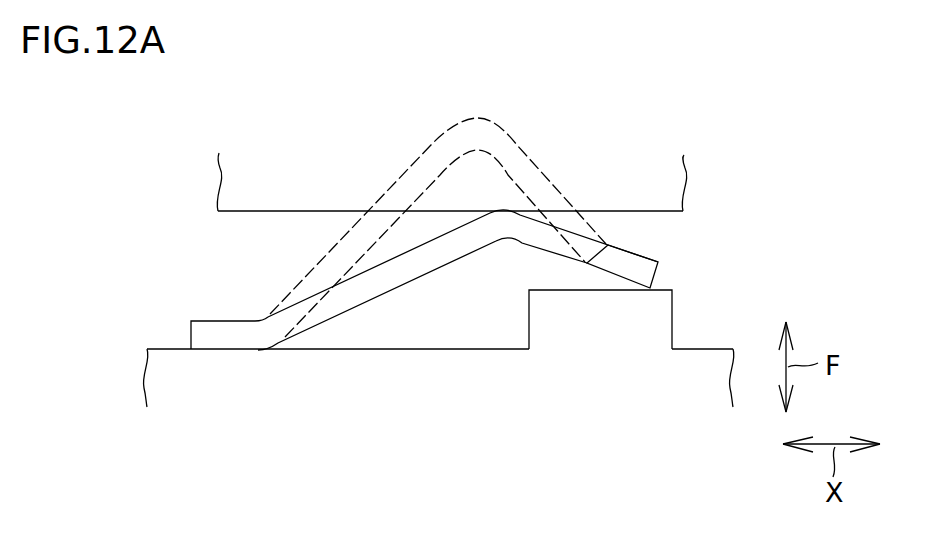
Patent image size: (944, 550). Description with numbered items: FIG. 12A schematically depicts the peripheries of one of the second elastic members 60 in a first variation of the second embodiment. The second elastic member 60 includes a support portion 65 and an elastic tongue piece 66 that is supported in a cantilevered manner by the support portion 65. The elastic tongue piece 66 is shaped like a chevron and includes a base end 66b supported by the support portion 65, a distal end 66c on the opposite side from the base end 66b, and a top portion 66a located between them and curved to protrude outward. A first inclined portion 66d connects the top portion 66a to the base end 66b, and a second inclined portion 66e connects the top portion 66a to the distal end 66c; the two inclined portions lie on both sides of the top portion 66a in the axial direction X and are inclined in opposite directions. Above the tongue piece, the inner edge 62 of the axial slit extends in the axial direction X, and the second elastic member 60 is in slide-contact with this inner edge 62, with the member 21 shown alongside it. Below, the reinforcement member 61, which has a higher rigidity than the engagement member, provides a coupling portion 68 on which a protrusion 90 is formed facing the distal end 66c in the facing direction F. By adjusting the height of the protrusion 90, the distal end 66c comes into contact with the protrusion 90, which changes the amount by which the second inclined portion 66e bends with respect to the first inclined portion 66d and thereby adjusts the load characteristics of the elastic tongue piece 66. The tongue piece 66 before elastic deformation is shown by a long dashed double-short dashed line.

The medium 21 is at (277, 190).
The second elastic member 60 is at (222, 321).
The reinforcement member 61 is at (145, 382).
The inner edge 62 is at (668, 213).
The support portion 65 is at (213, 342).
The elastic tongue piece 66 is at (505, 280).
The top portion 66a is at (510, 222).
The base end 66b is at (268, 342).
The distal end 66c is at (625, 249).
The first inclined portion 66d is at (402, 270).
The second inclined portion 66e is at (560, 248).
The coupling portion 68 is at (707, 372).
The protrusion 90 is at (627, 310).